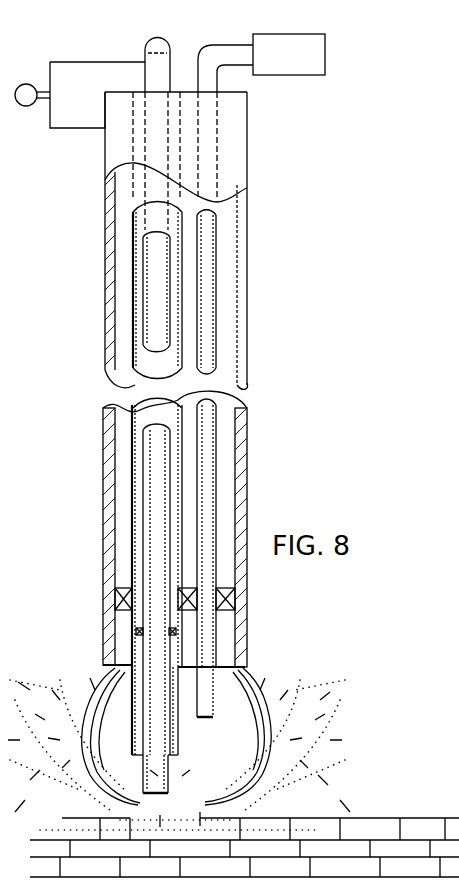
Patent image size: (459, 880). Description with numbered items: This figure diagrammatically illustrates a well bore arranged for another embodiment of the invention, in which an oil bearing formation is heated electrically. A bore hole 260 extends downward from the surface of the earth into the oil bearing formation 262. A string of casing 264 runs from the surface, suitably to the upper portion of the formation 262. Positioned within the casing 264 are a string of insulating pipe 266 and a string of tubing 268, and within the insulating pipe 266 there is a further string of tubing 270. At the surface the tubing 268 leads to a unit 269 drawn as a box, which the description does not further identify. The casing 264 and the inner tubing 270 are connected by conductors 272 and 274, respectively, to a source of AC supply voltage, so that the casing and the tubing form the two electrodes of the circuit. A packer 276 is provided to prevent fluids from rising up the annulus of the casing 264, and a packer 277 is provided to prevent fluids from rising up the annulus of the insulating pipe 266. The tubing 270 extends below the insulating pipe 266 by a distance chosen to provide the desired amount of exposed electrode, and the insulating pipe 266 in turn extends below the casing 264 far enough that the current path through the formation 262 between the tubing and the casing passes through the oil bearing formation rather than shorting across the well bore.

The bore hole 260 is at (247, 283).
The oil bearing formation 262 is at (306, 702).
The casing 264 is at (245, 248).
The insulating pipe 266 is at (134, 287).
The tubing 268 is at (230, 311).
The gas source 269 is at (293, 75).
The tubing 270 is at (141, 268).
The conductor 272 is at (50, 113).
The conductor 274 is at (97, 52).
The packer 276 is at (228, 600).
The packer 277 is at (137, 631).